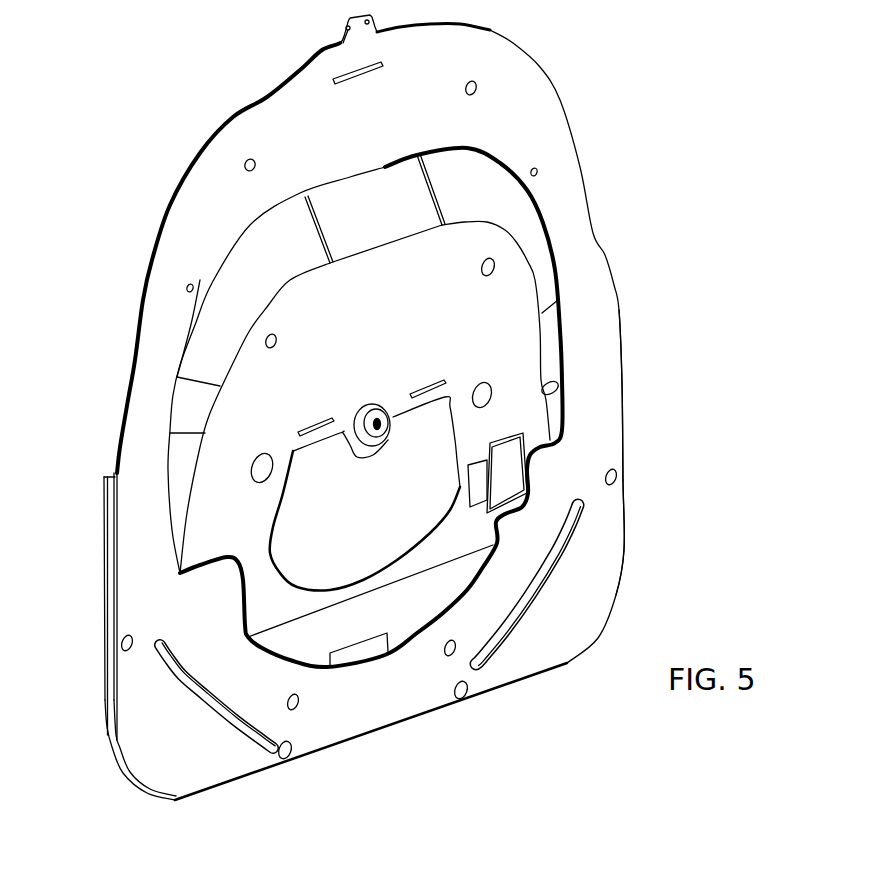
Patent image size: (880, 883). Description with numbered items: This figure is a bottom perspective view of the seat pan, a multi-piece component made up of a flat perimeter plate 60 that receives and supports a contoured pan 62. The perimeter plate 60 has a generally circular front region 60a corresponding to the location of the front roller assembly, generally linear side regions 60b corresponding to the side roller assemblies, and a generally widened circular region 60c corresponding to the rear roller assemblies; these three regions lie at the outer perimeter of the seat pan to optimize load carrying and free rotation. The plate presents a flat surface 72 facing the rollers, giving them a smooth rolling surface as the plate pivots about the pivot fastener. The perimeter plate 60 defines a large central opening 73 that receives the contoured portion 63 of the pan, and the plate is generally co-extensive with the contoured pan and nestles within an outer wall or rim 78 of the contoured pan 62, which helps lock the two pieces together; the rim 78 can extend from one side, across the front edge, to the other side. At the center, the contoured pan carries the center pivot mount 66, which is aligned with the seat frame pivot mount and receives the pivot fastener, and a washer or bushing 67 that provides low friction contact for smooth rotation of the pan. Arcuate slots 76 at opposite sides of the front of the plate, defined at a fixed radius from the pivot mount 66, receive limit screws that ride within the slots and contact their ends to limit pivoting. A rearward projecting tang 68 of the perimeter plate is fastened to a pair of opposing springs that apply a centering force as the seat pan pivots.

The flat perimeter plate 60 is at (374, 403).
The circular front region 60a is at (233, 117).
The linear side regions 60b is at (115, 450).
The widened circular region 60c is at (372, 692).
The contoured pan 62 is at (510, 245).
The contoured portion 63 is at (394, 227).
The center pivot mount 66 is at (377, 432).
The washer 67 is at (387, 418).
The rearward projecting tang 68 is at (350, 18).
The flat surface 72 is at (603, 538).
The central opening 73 is at (541, 390).
The arcuate slots 76 is at (187, 710).
The rim 78 is at (100, 552).